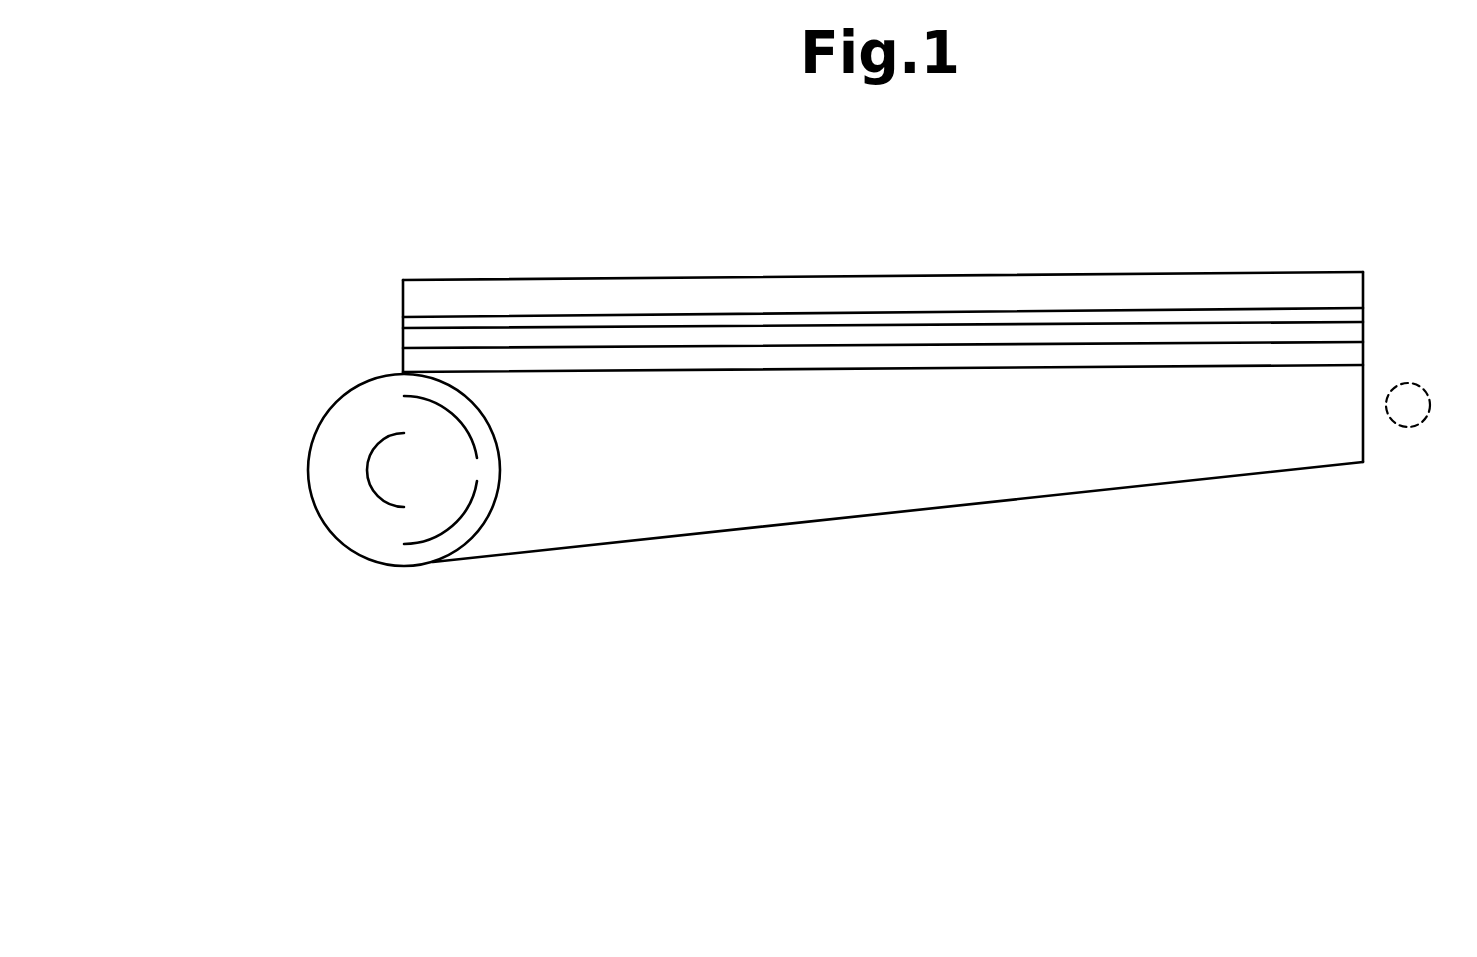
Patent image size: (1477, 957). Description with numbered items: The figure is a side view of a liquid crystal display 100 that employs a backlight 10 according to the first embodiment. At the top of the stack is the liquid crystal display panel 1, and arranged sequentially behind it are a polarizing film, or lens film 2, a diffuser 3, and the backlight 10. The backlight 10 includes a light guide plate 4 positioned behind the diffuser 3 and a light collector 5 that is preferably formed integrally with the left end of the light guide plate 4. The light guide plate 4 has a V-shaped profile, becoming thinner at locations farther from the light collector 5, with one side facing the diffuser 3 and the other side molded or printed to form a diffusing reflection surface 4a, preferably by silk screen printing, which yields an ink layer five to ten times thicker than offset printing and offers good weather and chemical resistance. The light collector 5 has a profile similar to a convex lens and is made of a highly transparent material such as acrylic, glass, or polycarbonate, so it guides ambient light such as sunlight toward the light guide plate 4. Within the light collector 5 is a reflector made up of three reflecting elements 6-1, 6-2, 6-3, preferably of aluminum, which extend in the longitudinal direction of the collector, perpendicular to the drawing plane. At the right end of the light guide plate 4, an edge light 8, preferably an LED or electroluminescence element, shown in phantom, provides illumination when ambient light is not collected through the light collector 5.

The liquid crystal display 100 is at (1236, 213).
The liquid crystal display panel 1 is at (1350, 291).
The polarizing film, or lens film 2 is at (1353, 330).
The diffuser 3 is at (1355, 357).
The light guide plate 4 is at (1060, 465).
The diffusing reflection surface 4a is at (790, 527).
The backlight 10 is at (190, 375).
The light collector 5 is at (328, 504).
The reflecting element 6-1 is at (373, 449).
The reflecting element 6-2 is at (468, 518).
The reflecting element 6-3 is at (465, 423).
The edge light 8 is at (1410, 427).